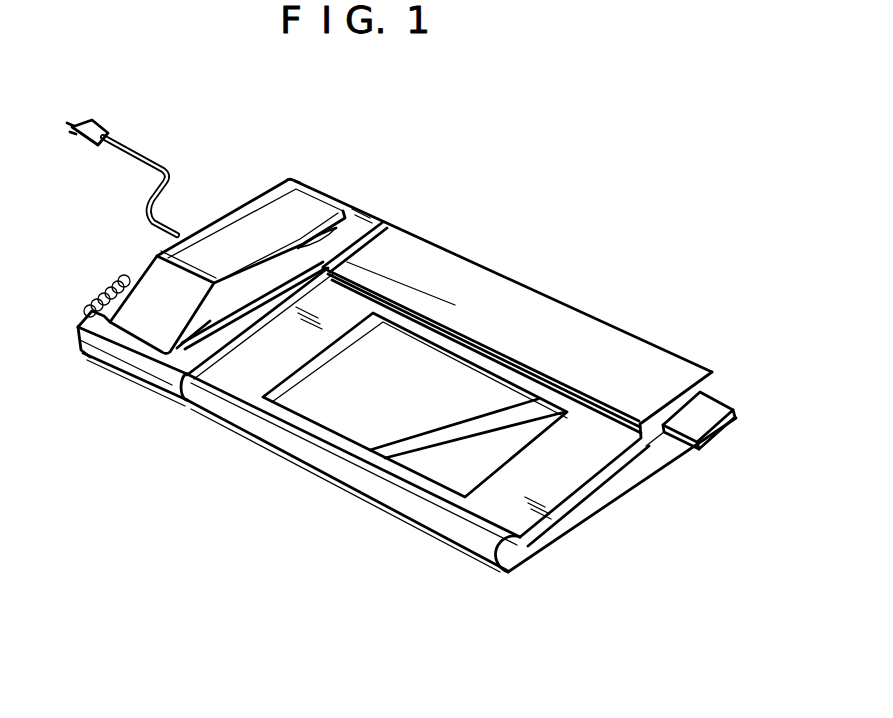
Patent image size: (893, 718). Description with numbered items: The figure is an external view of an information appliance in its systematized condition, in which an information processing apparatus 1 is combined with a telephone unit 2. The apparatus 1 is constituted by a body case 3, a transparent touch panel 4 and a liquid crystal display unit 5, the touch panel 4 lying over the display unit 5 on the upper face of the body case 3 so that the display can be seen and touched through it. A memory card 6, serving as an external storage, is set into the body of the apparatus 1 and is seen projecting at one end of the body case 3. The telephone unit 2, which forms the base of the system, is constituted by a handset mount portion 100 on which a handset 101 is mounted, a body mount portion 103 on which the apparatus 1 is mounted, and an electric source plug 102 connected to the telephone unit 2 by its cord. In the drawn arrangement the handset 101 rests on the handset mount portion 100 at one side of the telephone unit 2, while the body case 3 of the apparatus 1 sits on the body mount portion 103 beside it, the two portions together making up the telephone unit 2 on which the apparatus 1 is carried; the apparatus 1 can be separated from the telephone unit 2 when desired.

The information processing apparatus 1 is at (573, 307).
The telephone unit 2 is at (300, 180).
The body case 3 is at (457, 257).
The transparent touch panel 4 is at (337, 415).
The liquid crystal display unit 5 is at (427, 463).
The memory card 6 is at (723, 400).
The handset mount portion 100 is at (73, 432).
The handset 101 is at (150, 263).
The electric source plug 102 is at (104, 133).
The body mount portion 103 is at (639, 519).